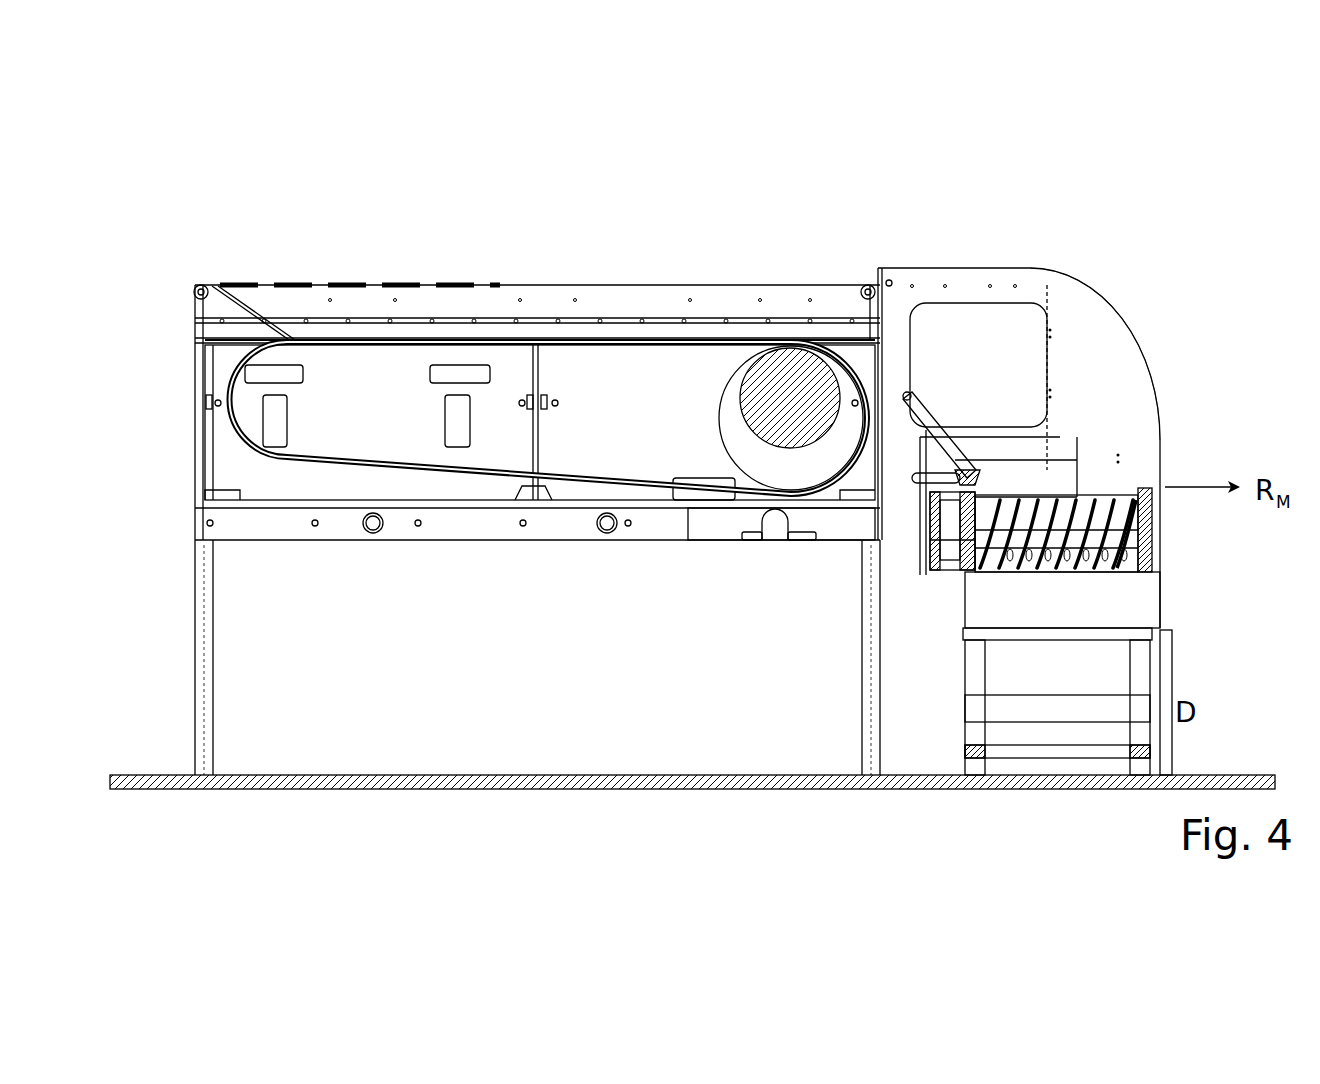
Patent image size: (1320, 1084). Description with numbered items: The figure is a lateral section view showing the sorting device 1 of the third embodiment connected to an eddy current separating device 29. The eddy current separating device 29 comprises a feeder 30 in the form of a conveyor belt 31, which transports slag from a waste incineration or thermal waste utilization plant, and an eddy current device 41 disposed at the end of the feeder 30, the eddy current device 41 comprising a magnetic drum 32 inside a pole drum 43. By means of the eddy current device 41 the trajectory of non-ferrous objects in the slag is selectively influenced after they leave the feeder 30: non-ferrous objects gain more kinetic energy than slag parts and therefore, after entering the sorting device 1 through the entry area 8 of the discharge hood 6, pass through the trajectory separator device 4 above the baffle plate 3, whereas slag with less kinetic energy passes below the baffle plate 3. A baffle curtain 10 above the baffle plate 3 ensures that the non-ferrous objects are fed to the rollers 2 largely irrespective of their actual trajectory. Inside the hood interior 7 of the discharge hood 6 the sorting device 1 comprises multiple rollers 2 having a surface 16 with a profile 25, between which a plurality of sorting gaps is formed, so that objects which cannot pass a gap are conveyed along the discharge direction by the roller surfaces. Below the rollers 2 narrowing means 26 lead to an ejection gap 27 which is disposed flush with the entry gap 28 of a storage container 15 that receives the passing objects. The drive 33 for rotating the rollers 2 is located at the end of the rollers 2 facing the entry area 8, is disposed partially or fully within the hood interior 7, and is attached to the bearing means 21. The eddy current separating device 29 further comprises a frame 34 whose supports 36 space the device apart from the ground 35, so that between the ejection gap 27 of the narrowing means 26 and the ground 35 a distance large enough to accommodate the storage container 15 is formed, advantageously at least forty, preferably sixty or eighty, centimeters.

The sorting device 1 is at (1112, 322).
The roller 2 is at (1072, 522).
The baffle plate 3 is at (919, 528).
The trajectory separator device 4 is at (966, 386).
The discharge hood 6 is at (921, 290).
The hood interior 7 is at (1079, 377).
The entry area 8 is at (888, 332).
The baffle curtain 10 is at (1048, 306).
The storage container 15 is at (992, 668).
The surface 16 is at (1163, 455).
The bearing means 21 is at (976, 500).
The profile 25 is at (1112, 510).
The narrowing means 26 is at (1108, 568).
The ejection gap 27 is at (1007, 630).
The entry gap 28 is at (1050, 640).
The eddy current separating device 29 is at (450, 268).
The feeder 30 is at (350, 372).
The conveyor belt 31 is at (472, 340).
The magnetic drum 32 is at (784, 380).
The drive 33 is at (941, 547).
The frame 34 is at (208, 727).
The ground 35 is at (539, 777).
The support 36 is at (203, 636).
The eddy current device 41 is at (866, 242).
The pole drum 43 is at (719, 400).